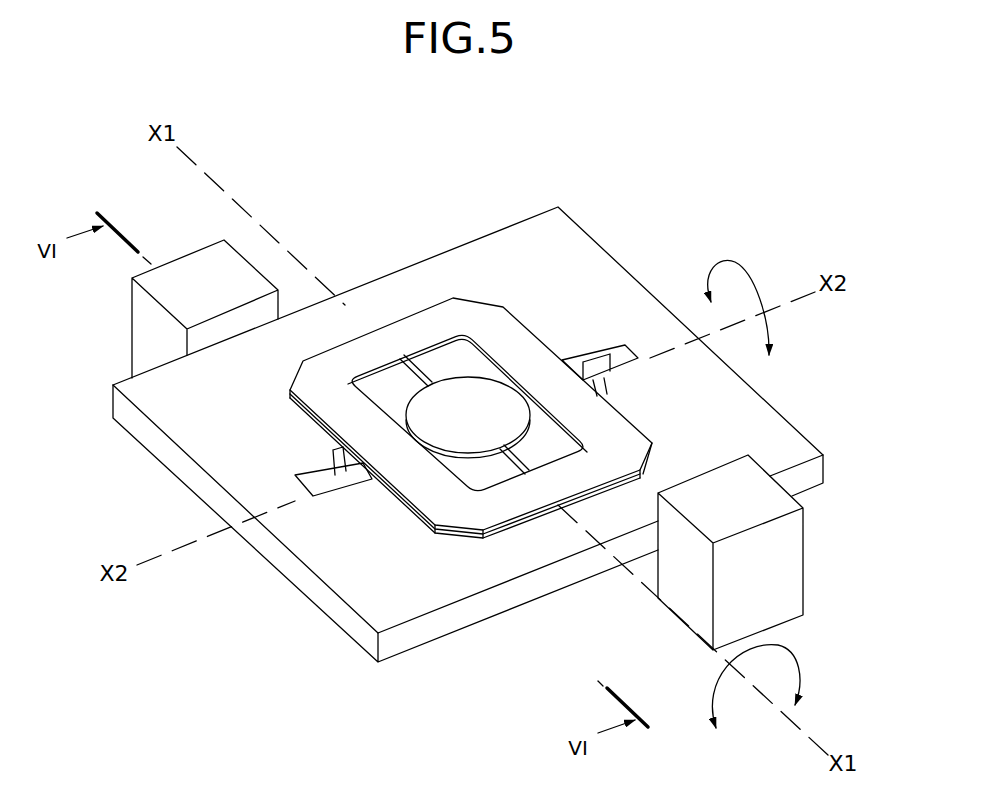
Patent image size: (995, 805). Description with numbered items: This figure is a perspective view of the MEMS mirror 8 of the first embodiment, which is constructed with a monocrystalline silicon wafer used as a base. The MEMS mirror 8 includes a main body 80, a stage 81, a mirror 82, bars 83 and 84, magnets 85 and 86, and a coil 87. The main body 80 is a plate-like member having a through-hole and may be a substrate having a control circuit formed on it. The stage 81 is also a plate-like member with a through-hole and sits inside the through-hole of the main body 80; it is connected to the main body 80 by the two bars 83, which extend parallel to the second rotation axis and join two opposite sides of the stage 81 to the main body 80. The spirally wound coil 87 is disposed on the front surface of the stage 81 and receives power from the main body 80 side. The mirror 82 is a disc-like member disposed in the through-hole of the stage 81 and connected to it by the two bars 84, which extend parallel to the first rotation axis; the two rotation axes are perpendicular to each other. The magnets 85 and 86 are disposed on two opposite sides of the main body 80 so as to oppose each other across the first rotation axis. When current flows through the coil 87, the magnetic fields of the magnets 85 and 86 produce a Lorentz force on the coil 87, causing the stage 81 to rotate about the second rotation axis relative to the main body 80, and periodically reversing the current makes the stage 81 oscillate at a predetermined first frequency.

The MEMS mirror 8 is at (311, 168).
The main body 80 is at (388, 295).
The stage 81 is at (303, 421).
The mirror 82 is at (492, 392).
The bars 83 is at (606, 356).
The bars 84 is at (426, 383).
The magnet 85 is at (205, 268).
The magnet 86 is at (804, 537).
The coil 87 is at (430, 325).